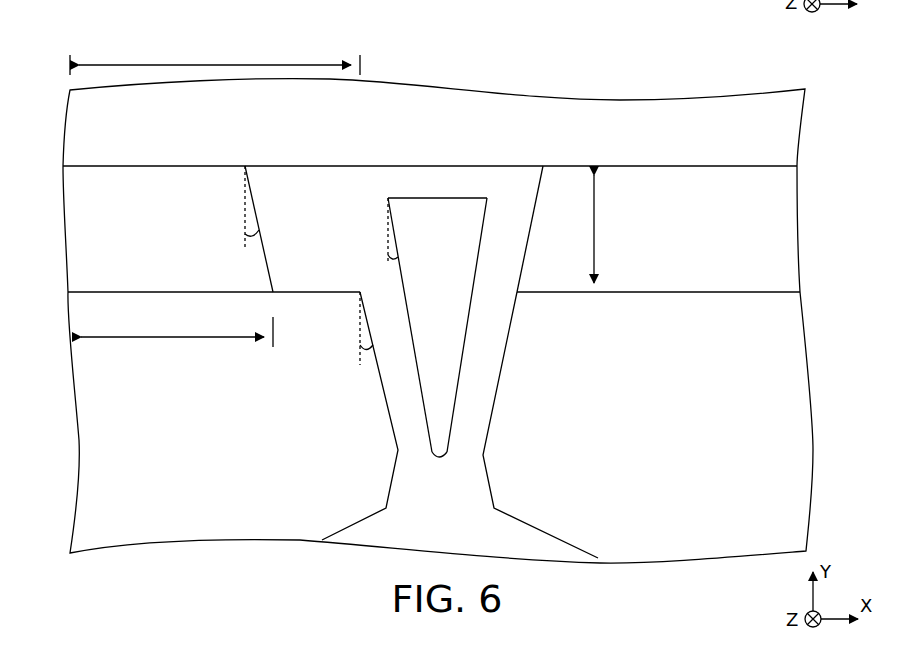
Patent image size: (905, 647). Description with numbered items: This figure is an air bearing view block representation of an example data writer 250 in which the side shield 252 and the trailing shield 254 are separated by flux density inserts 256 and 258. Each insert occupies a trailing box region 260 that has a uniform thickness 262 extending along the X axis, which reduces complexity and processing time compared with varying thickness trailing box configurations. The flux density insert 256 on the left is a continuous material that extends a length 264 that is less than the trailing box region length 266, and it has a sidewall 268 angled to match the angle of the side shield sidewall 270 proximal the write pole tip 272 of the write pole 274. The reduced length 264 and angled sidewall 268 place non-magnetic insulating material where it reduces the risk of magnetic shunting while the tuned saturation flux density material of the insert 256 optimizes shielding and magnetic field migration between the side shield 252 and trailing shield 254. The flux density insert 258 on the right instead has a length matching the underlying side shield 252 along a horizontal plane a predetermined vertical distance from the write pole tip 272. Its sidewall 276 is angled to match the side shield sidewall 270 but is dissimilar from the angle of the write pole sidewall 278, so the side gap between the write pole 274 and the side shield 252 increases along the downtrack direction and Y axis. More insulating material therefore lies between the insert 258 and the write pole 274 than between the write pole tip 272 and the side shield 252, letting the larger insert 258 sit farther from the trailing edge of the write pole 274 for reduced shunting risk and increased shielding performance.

The data writer 250 is at (121, 50).
The side shield 252 is at (437, 364).
The trailing shield 254 is at (430, 140).
The flux density insert 256 is at (214, 254).
The flux density insert 258 is at (658, 254).
The trailing box region 260 is at (290, 296).
The uniform thickness 262 is at (572, 229).
The length 264 is at (177, 340).
The trailing box region length 266 is at (215, 58).
The sidewall 268 is at (258, 228).
The side shield sidewall 270 is at (396, 444).
The write pole tip 272 is at (442, 466).
The write pole 274 is at (432, 325).
The sidewall 276 is at (530, 217).
The write pole sidewall 278 is at (456, 396).